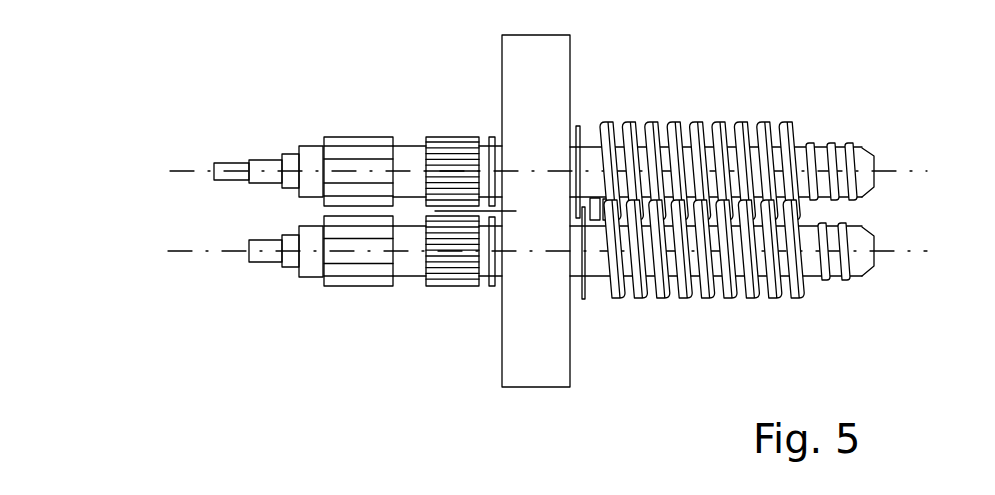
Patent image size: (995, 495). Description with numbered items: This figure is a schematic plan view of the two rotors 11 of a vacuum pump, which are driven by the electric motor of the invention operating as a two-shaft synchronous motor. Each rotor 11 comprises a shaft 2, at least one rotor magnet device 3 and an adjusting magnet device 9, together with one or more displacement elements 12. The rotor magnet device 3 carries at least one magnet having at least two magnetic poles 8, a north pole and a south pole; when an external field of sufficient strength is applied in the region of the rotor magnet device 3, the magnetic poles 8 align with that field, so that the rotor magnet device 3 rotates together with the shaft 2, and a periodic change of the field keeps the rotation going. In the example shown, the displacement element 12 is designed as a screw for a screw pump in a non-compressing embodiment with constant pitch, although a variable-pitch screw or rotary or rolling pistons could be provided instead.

The rotor 11 is at (158, 182).
The shaft 2 is at (228, 178).
The rotor magnet device 3 is at (384, 110).
The magnetic poles 8 is at (346, 140).
The adjusting magnet device 9 is at (452, 314).
The displacement element 12 is at (744, 130).